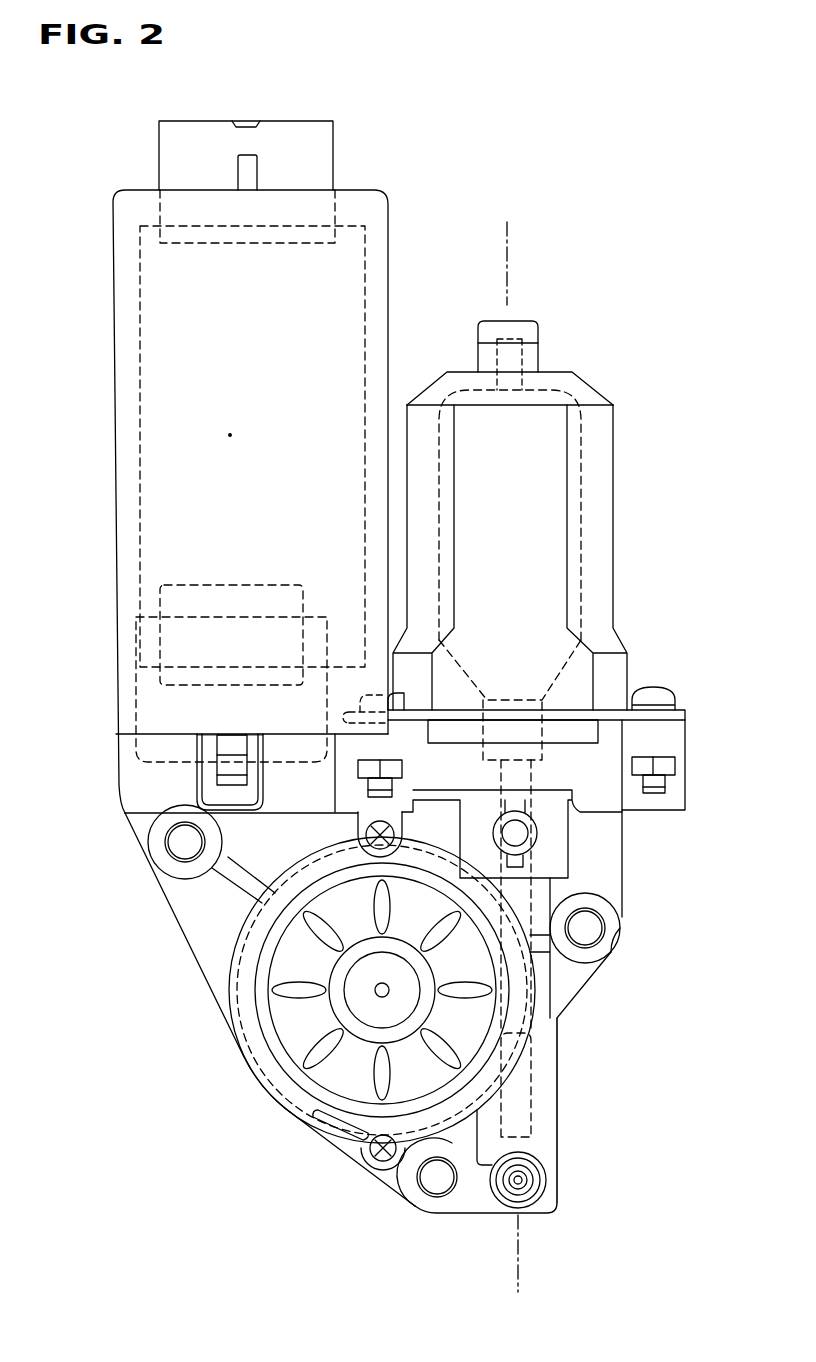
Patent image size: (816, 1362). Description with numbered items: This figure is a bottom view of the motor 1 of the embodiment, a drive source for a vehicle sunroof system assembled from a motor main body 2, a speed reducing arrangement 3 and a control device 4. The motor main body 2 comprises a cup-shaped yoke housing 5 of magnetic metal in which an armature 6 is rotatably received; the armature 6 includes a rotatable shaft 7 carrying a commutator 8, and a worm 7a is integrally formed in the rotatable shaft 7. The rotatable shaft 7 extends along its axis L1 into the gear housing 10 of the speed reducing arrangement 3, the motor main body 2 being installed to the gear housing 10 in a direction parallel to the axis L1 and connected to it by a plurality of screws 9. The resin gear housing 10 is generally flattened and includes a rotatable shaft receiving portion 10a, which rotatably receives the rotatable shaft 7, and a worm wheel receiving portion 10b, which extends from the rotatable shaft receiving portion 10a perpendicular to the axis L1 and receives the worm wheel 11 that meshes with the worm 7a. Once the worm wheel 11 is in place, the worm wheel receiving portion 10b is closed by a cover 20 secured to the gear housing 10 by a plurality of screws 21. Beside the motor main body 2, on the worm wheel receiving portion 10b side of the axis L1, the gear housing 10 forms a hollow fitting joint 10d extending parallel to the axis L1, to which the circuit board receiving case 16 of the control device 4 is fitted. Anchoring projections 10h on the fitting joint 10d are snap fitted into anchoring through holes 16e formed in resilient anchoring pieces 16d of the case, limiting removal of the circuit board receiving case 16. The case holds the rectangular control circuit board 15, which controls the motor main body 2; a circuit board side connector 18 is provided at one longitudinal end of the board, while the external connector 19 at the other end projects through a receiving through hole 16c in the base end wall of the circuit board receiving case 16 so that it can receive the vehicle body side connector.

The motor 1 is at (601, 117).
The motor main body 2 is at (588, 382).
The speed reducing arrangement 3 is at (627, 890).
The control device 4 is at (113, 317).
The yoke housing 5 is at (613, 450).
The armature 6 is at (583, 522).
The rotatable shaft 7 is at (530, 768).
The worm 7a is at (557, 1040).
The commutator 8 is at (548, 700).
The screws 9 is at (400, 699).
The gear housing 10 is at (608, 832).
The rotatable shaft receiving portion 10a is at (558, 1118).
The worm wheel receiving portion 10b is at (238, 1046).
The fitting joint 10d is at (118, 694).
The anchoring projection 10h is at (247, 778).
The worm wheel 11 is at (268, 1068).
The control circuit board 15 is at (138, 374).
The circuit board receiving case 16 is at (113, 234).
The receiving through hole 16c is at (177, 207).
The anchoring piece 16d is at (238, 802).
The anchoring through hole 16e is at (218, 776).
The circuit board side connector 18 is at (213, 692).
The external connector 19 is at (293, 122).
The cover 20 is at (292, 1103).
The screws 21 is at (417, 824).
The axis L1 is at (507, 262).